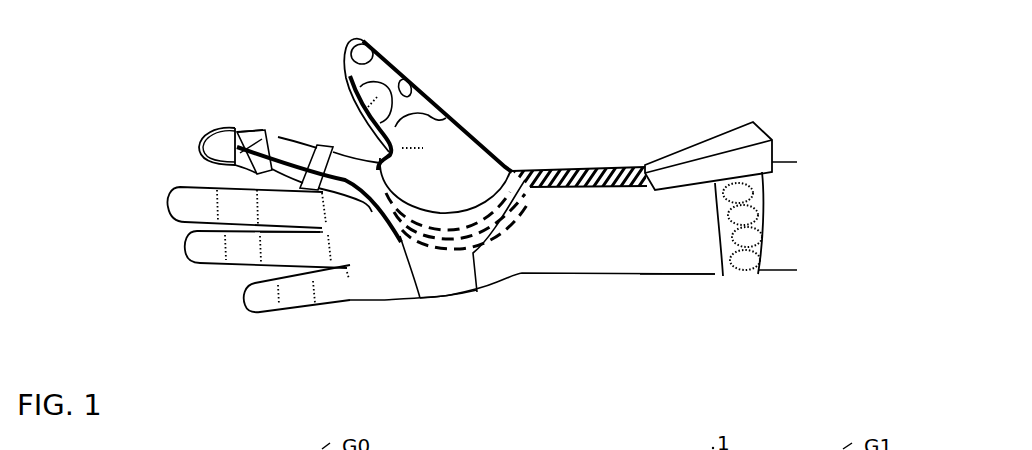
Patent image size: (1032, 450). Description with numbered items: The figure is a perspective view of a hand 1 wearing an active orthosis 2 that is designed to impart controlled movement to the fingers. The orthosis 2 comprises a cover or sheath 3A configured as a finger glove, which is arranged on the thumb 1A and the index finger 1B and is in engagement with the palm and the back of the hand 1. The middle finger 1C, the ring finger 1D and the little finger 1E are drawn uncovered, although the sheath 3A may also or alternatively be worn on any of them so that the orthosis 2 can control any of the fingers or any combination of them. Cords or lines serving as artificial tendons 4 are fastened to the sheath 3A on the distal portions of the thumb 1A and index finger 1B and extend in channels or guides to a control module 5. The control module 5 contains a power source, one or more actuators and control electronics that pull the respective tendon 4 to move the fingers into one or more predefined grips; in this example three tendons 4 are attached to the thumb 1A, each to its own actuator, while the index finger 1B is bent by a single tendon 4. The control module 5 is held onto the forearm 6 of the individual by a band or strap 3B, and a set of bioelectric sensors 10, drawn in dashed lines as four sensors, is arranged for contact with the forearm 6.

The hand 1 is at (193, 92).
The thumb 1A is at (347, 72).
The index finger 1B is at (252, 128).
The middle finger 1C is at (168, 208).
The ring finger 1D is at (185, 248).
The little finger 1E is at (245, 305).
The orthosis 2 is at (447, 302).
The sheath 3A is at (432, 284).
The strap 3B is at (738, 277).
The artificial tendons 4 is at (446, 119).
The control module 5 is at (728, 140).
The forearm 6 is at (708, 254).
The bioelectric sensors 10 is at (753, 193).